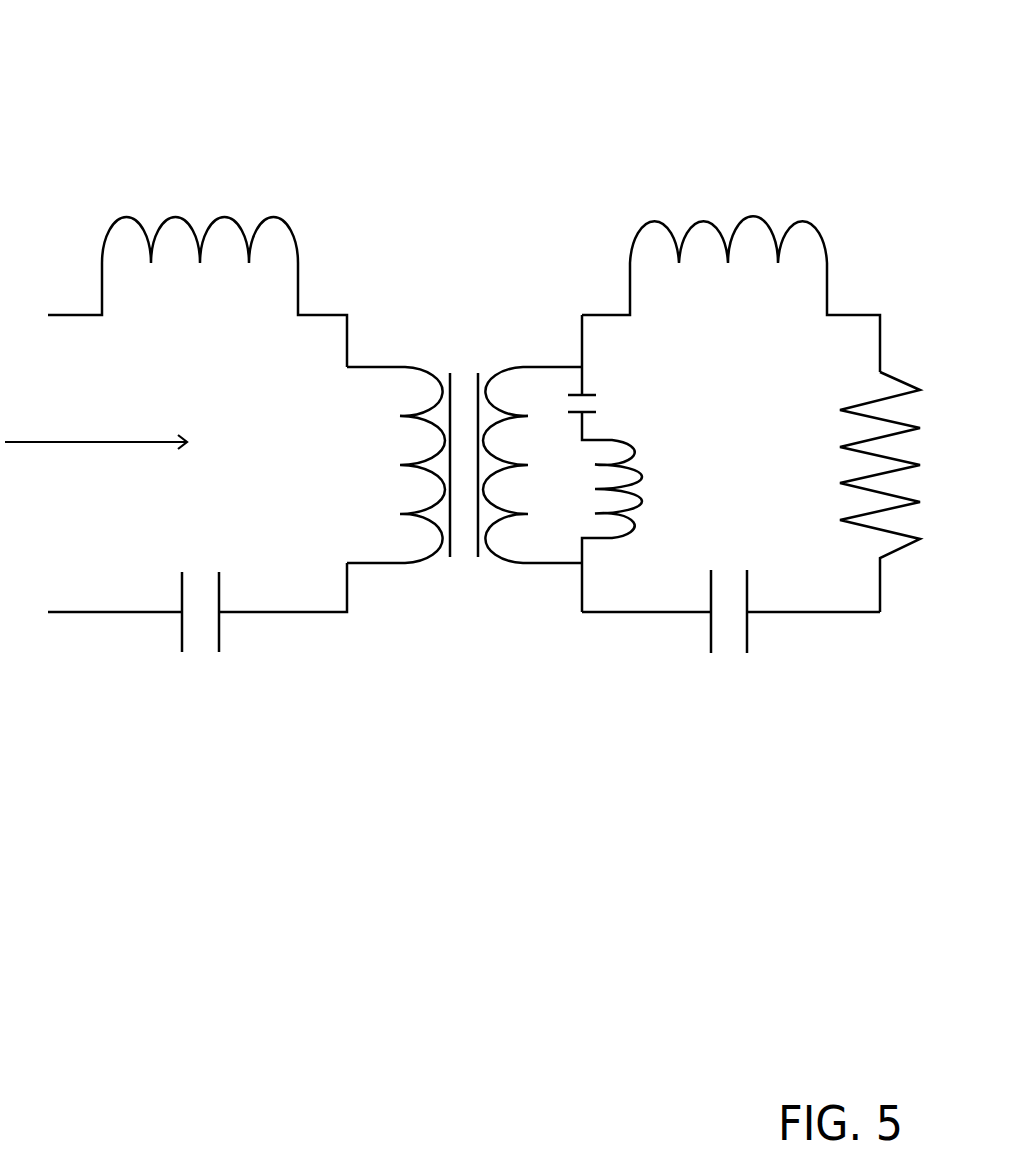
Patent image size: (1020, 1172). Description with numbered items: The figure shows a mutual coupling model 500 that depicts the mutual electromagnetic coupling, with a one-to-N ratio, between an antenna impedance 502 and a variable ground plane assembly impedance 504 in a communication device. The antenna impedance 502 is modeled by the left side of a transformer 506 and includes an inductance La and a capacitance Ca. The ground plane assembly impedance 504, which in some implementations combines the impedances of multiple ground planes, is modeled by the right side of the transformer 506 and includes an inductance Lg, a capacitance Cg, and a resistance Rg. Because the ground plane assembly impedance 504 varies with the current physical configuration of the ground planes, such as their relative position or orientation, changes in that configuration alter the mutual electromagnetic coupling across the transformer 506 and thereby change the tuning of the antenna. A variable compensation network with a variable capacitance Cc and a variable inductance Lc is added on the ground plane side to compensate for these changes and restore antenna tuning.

The mutual coupling model 500 is at (190, 888).
The antenna impedance 502 is at (167, 125).
The variable ground plane assembly impedance 504 is at (747, 133).
The transformer 506 is at (458, 676).